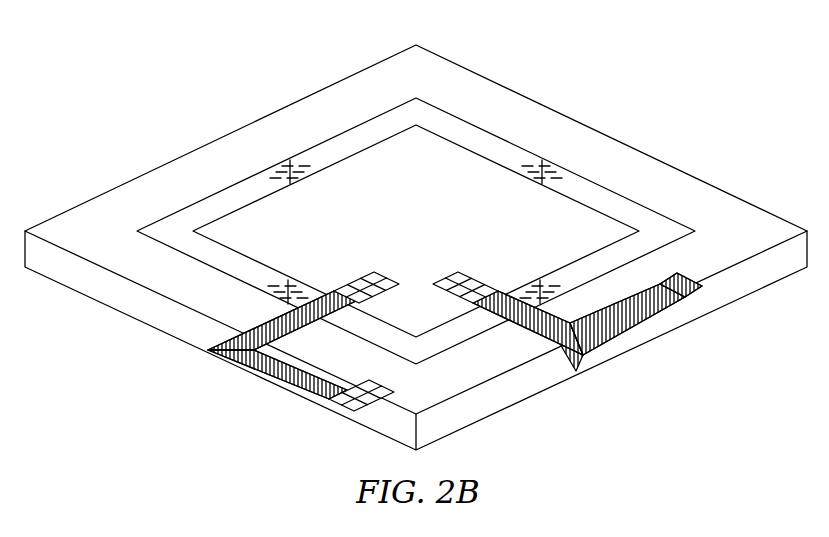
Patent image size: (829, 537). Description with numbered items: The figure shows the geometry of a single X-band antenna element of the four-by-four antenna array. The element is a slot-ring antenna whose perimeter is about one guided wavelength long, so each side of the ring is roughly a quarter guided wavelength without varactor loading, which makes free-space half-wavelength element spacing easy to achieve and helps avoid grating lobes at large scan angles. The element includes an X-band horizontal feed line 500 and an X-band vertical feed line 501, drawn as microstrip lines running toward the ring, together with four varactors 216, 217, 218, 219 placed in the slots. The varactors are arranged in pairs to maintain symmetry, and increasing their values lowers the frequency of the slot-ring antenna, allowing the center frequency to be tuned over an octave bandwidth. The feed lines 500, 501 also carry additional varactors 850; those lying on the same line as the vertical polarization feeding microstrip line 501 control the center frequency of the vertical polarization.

The varactor 216 is at (283, 165).
The varactor 217 is at (553, 163).
The varactor 218 is at (530, 283).
The varactor 219 is at (296, 284).
The X-band horizontal feed line 500 is at (226, 339).
The X-band vertical feed line 501 is at (605, 341).
The additional varactors 850 is at (386, 281).